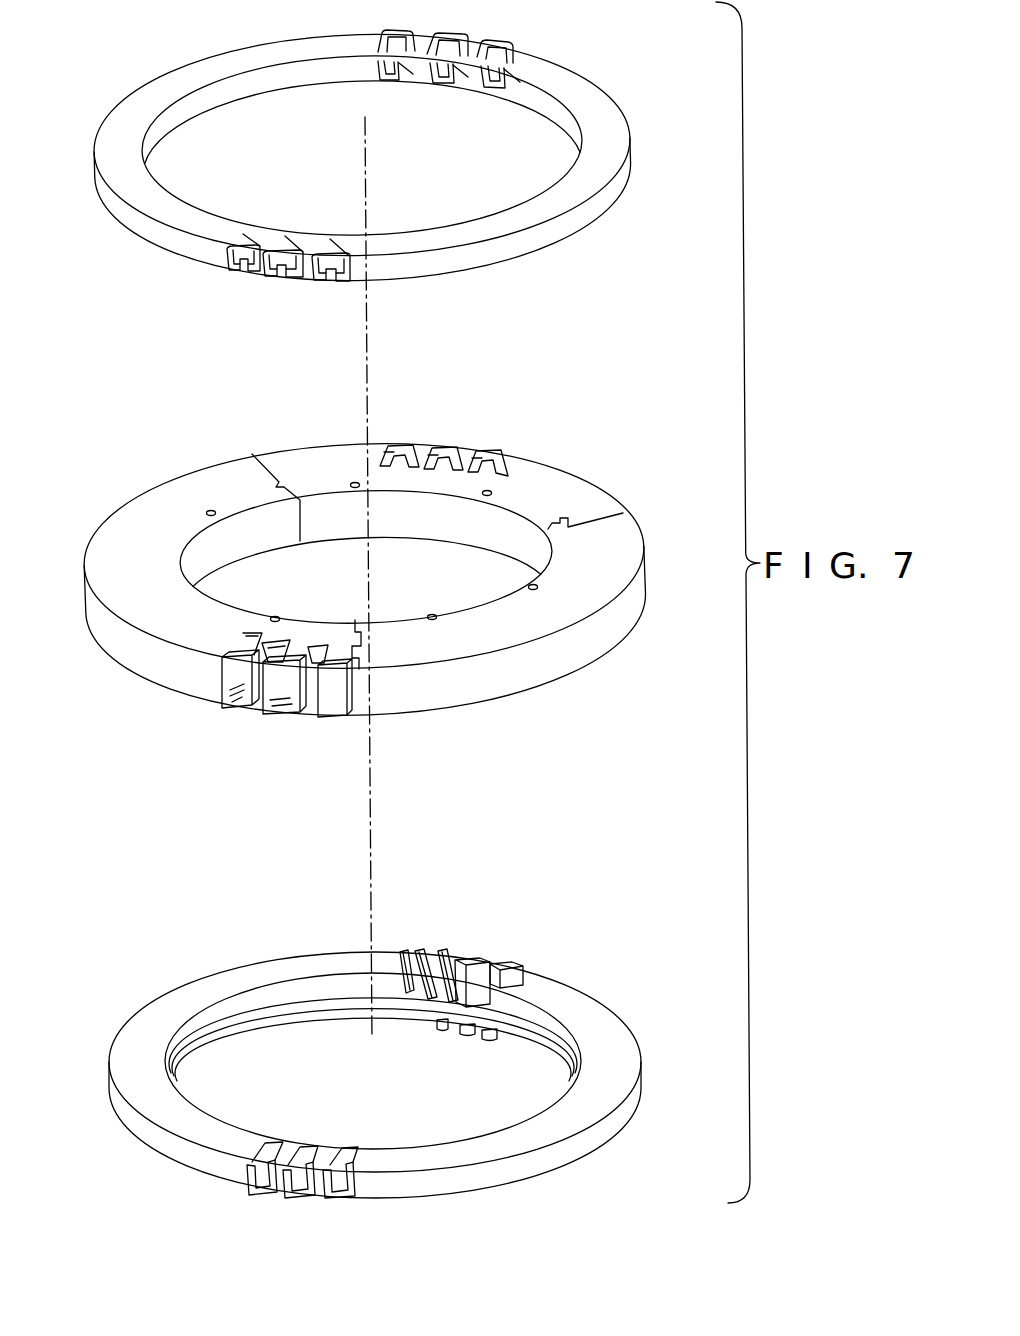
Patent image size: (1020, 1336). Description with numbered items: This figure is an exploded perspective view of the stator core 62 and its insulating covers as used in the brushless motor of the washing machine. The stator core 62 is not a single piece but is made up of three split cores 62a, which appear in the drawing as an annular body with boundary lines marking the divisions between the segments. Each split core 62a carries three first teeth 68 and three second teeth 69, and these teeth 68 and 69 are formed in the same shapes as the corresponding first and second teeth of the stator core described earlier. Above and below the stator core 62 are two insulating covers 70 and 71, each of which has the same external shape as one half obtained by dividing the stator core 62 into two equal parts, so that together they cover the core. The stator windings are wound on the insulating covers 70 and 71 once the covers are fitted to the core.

The stator core 62 is at (380, 585).
The split core 62a is at (530, 468).
The first teeth 68 is at (230, 676).
The second teeth 69 is at (273, 707).
The insulating cover 70 is at (498, 31).
The insulating cover 71 is at (495, 960).